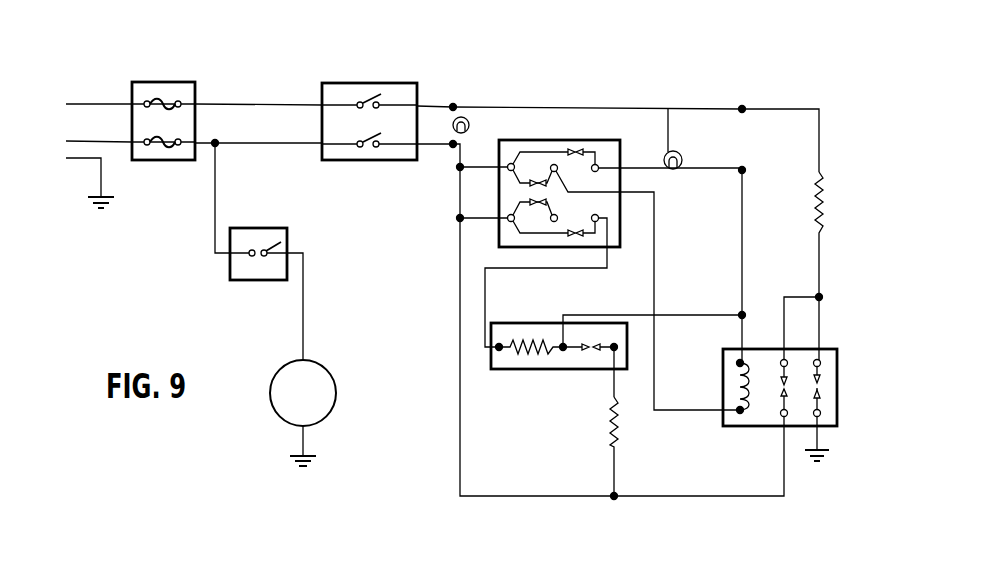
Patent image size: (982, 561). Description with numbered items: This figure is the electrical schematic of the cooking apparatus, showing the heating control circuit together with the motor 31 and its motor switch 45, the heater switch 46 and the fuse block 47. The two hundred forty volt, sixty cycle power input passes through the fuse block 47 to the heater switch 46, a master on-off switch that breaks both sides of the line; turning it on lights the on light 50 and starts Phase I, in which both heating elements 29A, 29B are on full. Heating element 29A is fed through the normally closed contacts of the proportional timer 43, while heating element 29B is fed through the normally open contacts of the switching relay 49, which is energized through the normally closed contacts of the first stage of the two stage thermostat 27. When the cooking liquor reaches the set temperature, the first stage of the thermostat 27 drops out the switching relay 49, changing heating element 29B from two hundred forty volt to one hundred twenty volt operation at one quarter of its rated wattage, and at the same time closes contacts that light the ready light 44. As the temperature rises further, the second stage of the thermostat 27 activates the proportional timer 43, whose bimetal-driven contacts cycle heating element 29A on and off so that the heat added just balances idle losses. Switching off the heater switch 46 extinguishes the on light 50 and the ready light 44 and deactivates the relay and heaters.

The fuse block 47 is at (166, 82).
The heater switch 46 is at (360, 83).
The on light 50 is at (466, 117).
The thermostat 27 is at (536, 140).
The ready light 44 is at (669, 150).
The heating element 29B is at (822, 182).
The proportional timer 43 is at (510, 370).
The heating element 29A is at (610, 407).
The switching relay 49 is at (760, 428).
The motor switch 45 is at (265, 228).
The motor 31 is at (317, 366).